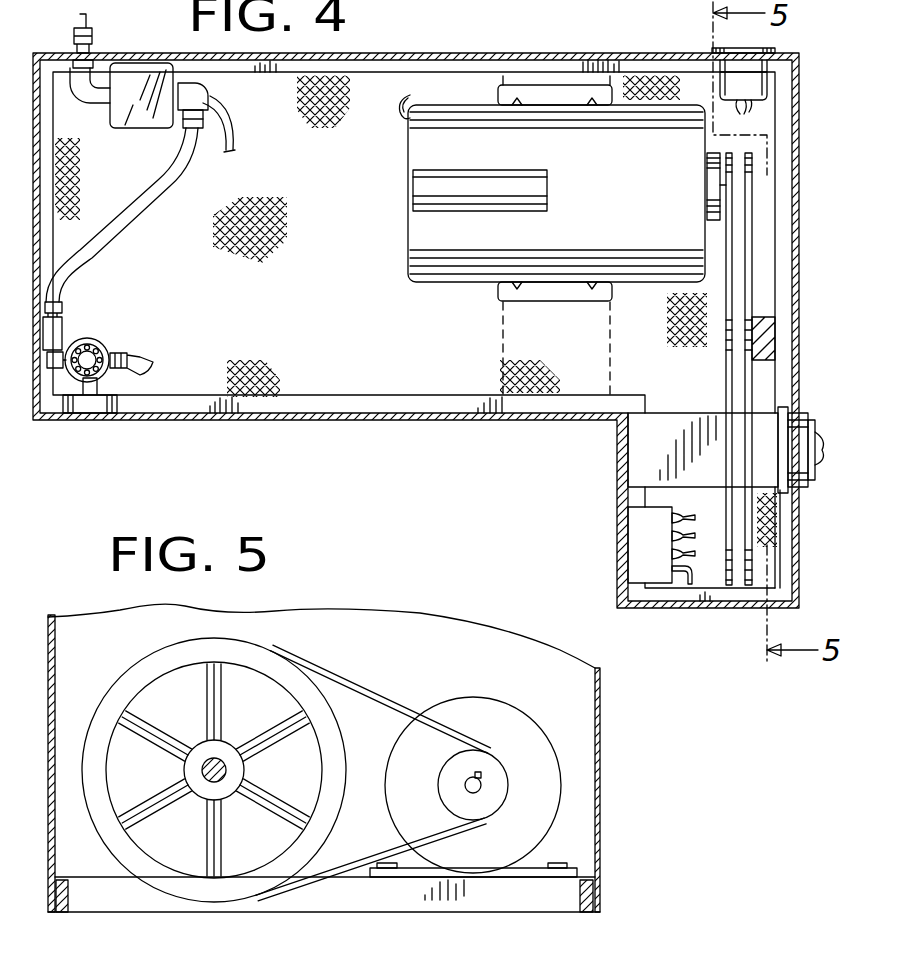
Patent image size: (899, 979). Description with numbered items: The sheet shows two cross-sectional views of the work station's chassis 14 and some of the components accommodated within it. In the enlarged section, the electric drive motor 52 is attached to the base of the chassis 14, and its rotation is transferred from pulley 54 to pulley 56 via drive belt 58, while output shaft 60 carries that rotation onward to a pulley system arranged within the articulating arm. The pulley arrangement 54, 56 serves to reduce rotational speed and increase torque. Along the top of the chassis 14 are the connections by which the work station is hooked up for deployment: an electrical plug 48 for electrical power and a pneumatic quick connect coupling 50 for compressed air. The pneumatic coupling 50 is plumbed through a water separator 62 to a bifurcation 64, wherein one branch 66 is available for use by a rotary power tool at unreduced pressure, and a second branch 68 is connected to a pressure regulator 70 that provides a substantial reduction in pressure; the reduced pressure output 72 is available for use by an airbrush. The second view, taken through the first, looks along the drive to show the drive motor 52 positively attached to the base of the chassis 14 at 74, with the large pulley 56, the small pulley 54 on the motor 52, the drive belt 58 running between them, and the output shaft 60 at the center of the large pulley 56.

In FIG. 5, the chassis 14 is at (95, 907).
In FIG. 4, the electrical plug 48 is at (762, 49).
In FIG. 4, the pneumatic quick connect coupling 50 is at (78, 26).
In FIG. 4, the electric drive motor 52 is at (640, 115).
In FIG. 5, the electric drive motor 52 is at (552, 775).
In FIG. 4, the pulley 54 is at (752, 186).
In FIG. 5, the pulley 54 is at (481, 783).
In FIG. 4, the pulley 56 is at (755, 358).
In FIG. 5, the pulley 56 is at (130, 675).
In FIG. 4, the drive belt 58 is at (738, 262).
In FIG. 5, the drive belt 58 is at (365, 697).
In FIG. 4, the output shaft 60 is at (823, 432).
In FIG. 5, the output shaft 60 is at (220, 781).
In FIG. 4, the water separator 62 is at (140, 75).
In FIG. 4, the bifurcation 64 is at (210, 99).
In FIG. 4, the branch 66 is at (233, 145).
In FIG. 4, the second branch 68 is at (125, 208).
In FIG. 4, the pressure regulator 70 is at (96, 345).
In FIG. 4, the reduced pressure output 72 is at (148, 356).
In FIG. 5, the attachment point 74 is at (566, 862).